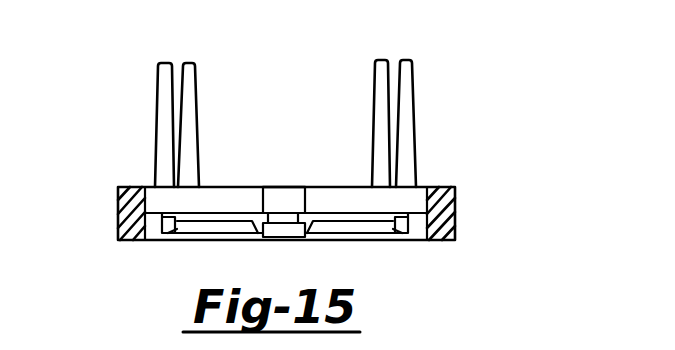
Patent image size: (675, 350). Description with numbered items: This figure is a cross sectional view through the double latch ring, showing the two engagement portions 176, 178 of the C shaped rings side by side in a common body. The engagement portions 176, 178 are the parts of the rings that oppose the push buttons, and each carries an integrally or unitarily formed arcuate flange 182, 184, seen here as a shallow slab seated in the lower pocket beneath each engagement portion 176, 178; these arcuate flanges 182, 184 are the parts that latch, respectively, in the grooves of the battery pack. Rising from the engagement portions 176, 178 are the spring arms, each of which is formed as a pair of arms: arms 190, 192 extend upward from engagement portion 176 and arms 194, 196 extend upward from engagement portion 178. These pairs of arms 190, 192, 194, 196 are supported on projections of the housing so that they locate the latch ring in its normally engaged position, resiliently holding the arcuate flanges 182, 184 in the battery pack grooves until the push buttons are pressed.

The engagement portion 176 is at (213, 197).
The engagement portion 178 is at (346, 198).
The arcuate flange 182 is at (208, 225).
The arcuate flange 184 is at (357, 223).
The arm 190 is at (163, 113).
The arm 192 is at (193, 102).
The arm 194 is at (380, 88).
The arm 196 is at (410, 75).